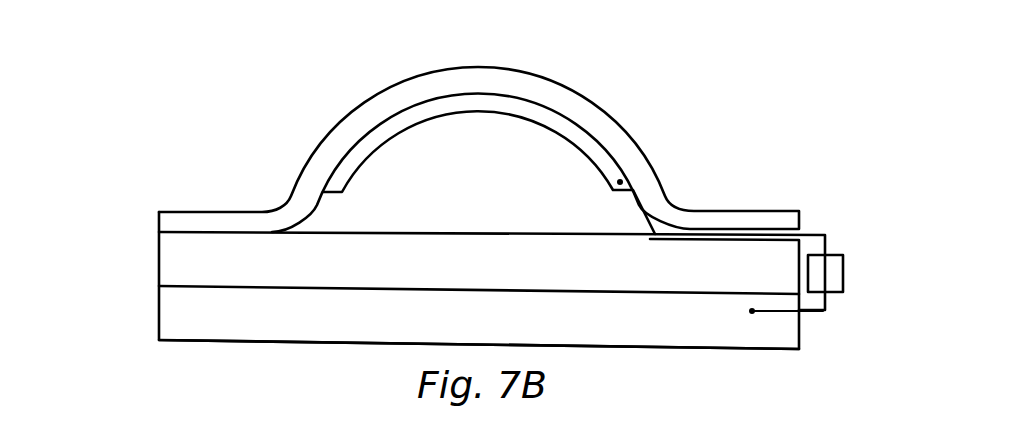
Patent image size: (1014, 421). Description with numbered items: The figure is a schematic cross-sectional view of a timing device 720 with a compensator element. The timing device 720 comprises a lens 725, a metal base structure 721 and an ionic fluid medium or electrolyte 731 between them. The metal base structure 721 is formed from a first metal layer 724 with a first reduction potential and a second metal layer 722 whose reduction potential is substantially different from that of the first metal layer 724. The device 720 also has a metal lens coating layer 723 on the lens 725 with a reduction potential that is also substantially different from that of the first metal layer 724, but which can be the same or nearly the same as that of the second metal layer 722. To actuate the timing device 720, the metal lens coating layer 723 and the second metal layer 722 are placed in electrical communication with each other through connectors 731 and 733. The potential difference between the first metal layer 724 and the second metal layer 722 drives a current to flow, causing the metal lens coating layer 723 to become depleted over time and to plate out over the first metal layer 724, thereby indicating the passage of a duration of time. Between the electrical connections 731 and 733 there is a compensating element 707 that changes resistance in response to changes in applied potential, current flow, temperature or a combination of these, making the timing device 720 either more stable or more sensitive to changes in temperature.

The timing device 720 is at (192, 77).
The metal base structure 721 is at (80, 228).
The second metal layer 722 is at (172, 311).
The metal lens coating layer 723 is at (376, 142).
The first metal layer 724 is at (172, 256).
The lens 725 is at (553, 107).
The ionic fluid medium or electrolyte / connector 731 is at (495, 190).
The connector 733 is at (823, 311).
The compensating element 707 is at (843, 272).